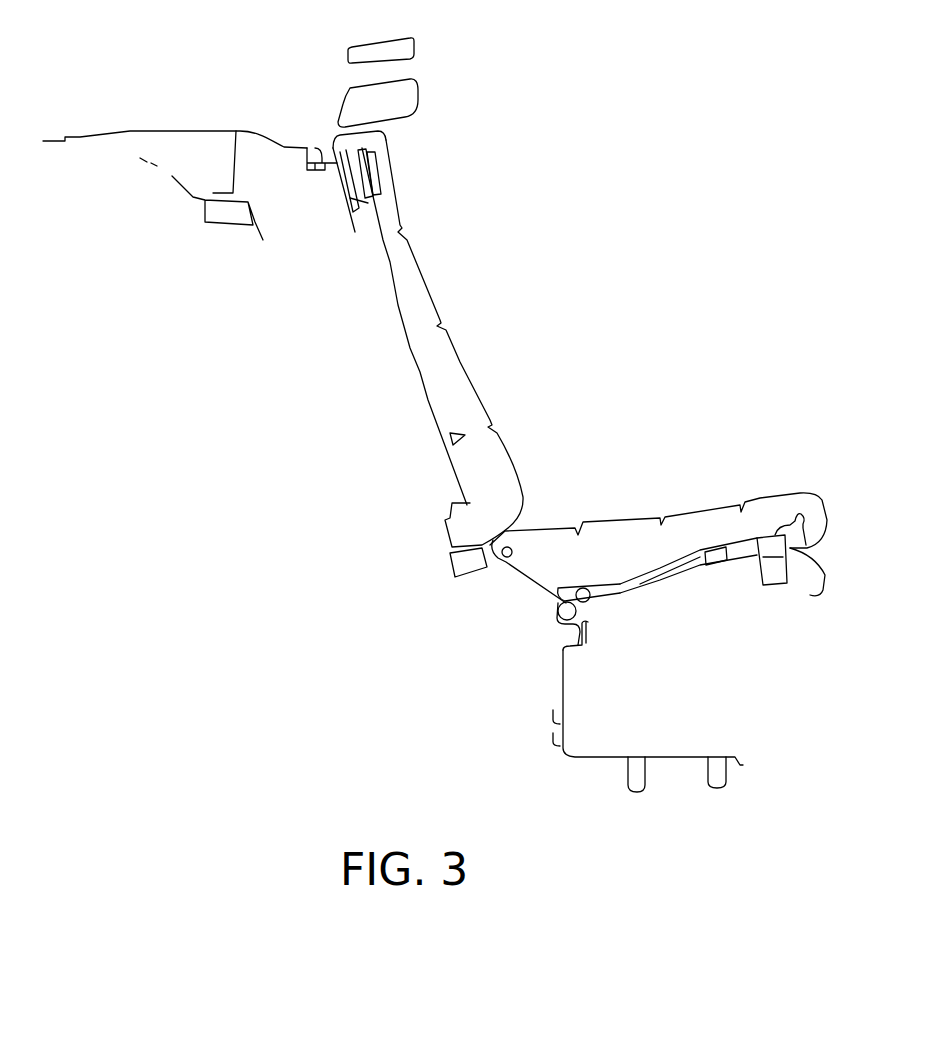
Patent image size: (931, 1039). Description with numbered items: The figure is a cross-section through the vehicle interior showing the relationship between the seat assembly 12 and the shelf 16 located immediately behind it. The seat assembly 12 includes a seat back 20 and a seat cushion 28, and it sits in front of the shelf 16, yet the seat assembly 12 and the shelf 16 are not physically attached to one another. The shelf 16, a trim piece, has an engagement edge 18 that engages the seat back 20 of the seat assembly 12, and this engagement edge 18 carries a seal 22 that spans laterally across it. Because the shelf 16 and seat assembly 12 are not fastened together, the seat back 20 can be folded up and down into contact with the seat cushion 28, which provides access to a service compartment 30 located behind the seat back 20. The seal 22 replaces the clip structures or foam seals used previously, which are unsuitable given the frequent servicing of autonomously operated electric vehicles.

The seat assembly 12 is at (636, 478).
The shelf 16 is at (80, 136).
The engagement edge 18 is at (301, 139).
The seat back 20 is at (422, 295).
The seal 22 is at (316, 140).
The seat cushion 28 is at (757, 508).
The service compartment 30 is at (200, 381).